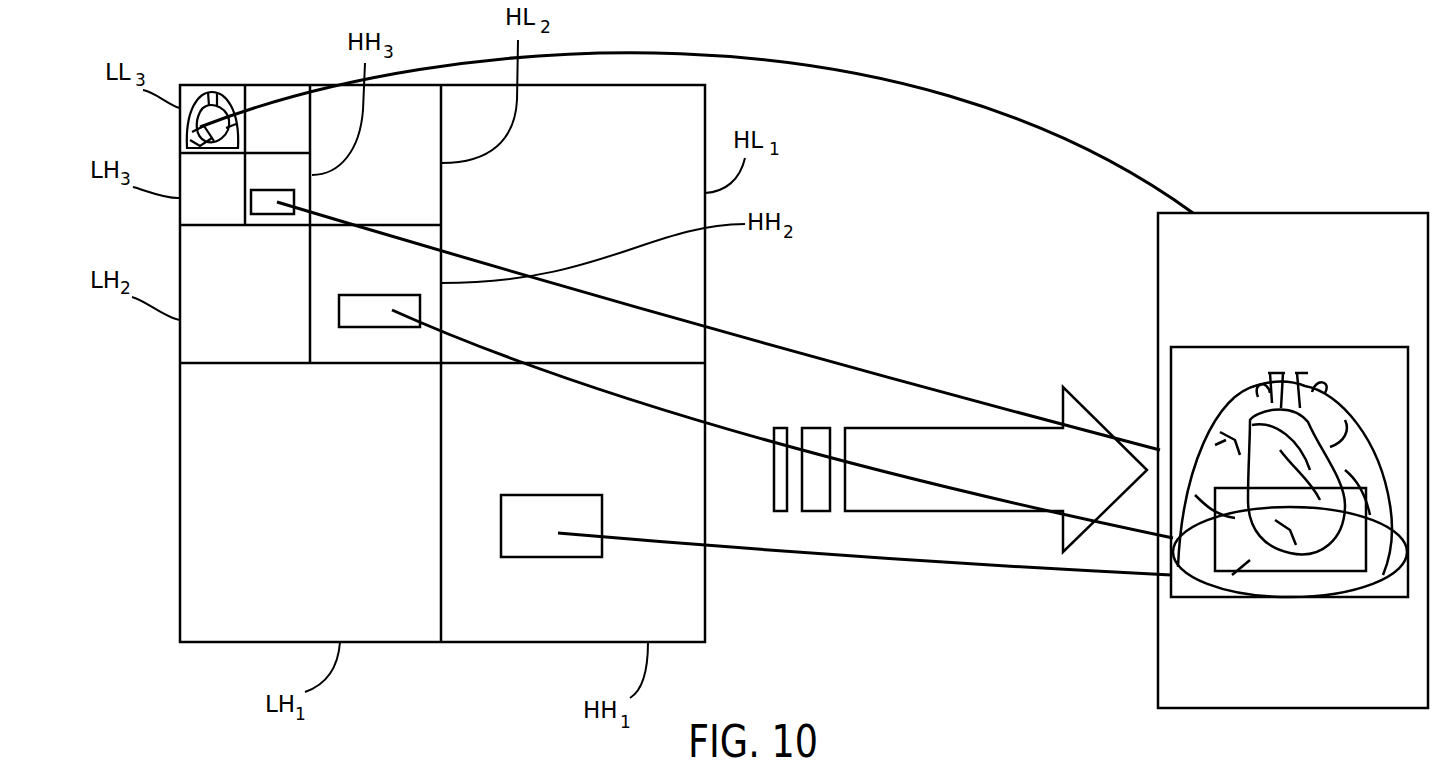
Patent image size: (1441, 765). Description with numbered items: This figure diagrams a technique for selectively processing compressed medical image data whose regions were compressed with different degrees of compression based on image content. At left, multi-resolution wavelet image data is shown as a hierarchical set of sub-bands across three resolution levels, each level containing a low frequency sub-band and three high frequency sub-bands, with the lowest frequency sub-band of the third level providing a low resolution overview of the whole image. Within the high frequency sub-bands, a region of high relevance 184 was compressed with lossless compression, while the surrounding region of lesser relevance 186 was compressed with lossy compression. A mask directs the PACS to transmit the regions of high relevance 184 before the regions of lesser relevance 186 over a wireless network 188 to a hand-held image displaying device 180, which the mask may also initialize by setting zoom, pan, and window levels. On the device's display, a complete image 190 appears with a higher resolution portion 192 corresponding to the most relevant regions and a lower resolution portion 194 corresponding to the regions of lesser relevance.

The hand-held image displaying device 180 is at (1176, 647).
The region of high relevance 184 is at (263, 214).
The region of lesser relevance 186 is at (270, 168).
The wireless network 188 is at (1098, 430).
The complete image 190 is at (1238, 383).
The higher resolution portion 192 is at (1327, 572).
The lower resolution portion 194 is at (1347, 430).